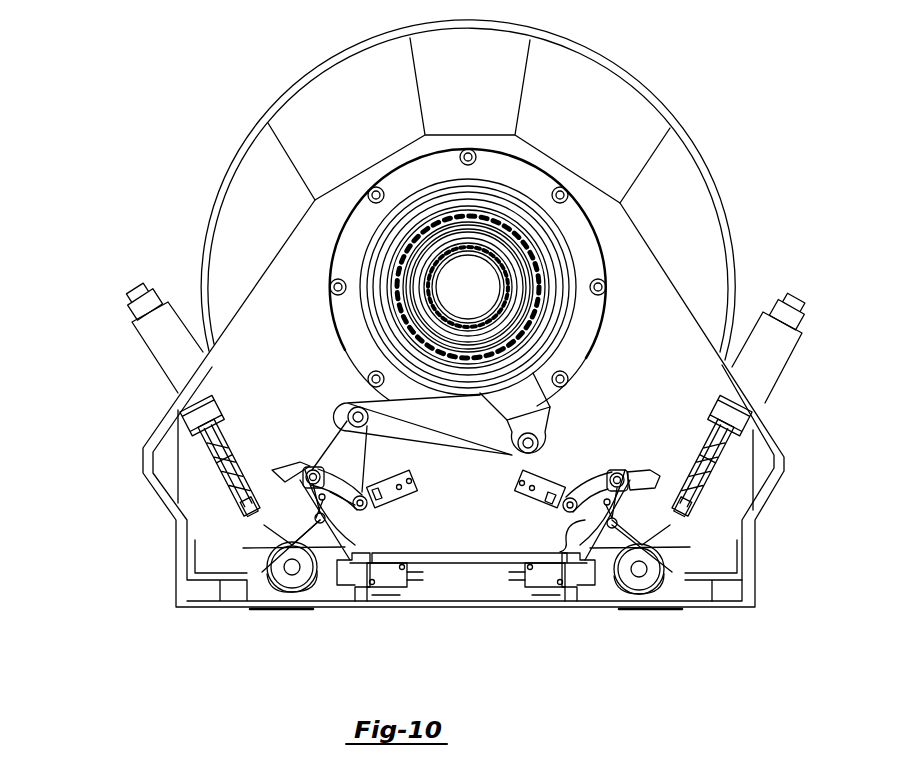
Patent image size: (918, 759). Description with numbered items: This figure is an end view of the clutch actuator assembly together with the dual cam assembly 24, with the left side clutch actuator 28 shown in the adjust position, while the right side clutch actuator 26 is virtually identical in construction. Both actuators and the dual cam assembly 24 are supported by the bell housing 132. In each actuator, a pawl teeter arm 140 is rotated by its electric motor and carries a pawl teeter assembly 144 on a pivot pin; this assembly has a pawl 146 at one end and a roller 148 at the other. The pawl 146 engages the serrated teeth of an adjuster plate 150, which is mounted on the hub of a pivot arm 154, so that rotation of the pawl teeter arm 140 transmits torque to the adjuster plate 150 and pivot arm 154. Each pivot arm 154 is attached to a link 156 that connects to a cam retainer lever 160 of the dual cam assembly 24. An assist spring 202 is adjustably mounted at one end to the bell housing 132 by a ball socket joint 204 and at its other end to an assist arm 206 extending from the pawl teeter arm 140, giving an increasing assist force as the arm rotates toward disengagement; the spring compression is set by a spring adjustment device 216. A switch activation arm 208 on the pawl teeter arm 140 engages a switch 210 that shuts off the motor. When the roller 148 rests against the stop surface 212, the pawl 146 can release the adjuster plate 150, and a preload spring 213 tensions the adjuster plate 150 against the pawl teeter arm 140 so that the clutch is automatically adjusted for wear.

The dual cam assembly 24 is at (522, 180).
The clutch actuator 26 is at (648, 392).
The clutch actuator 28 is at (290, 380).
The bell housing 132 is at (700, 152).
The pawl teeter arm 140 is at (270, 578).
The pawl teeter assembly 144 is at (310, 468).
The pawl 146 is at (278, 470).
The roller 148 is at (366, 500).
The adjuster plate 150 is at (566, 525).
The pivot arm 154 is at (345, 465).
The link 156 is at (452, 428).
The cam retainer lever 160 is at (548, 425).
The assist spring 202 is at (715, 476).
The ball socket joint 204 is at (745, 425).
The assist arm 206 is at (685, 528).
The switch activation arm 208 is at (345, 601).
The switch 210 is at (390, 590).
The stop surface 212 is at (395, 500).
The preload spring 213 is at (280, 600).
The spring adjustment device 216 is at (778, 345).